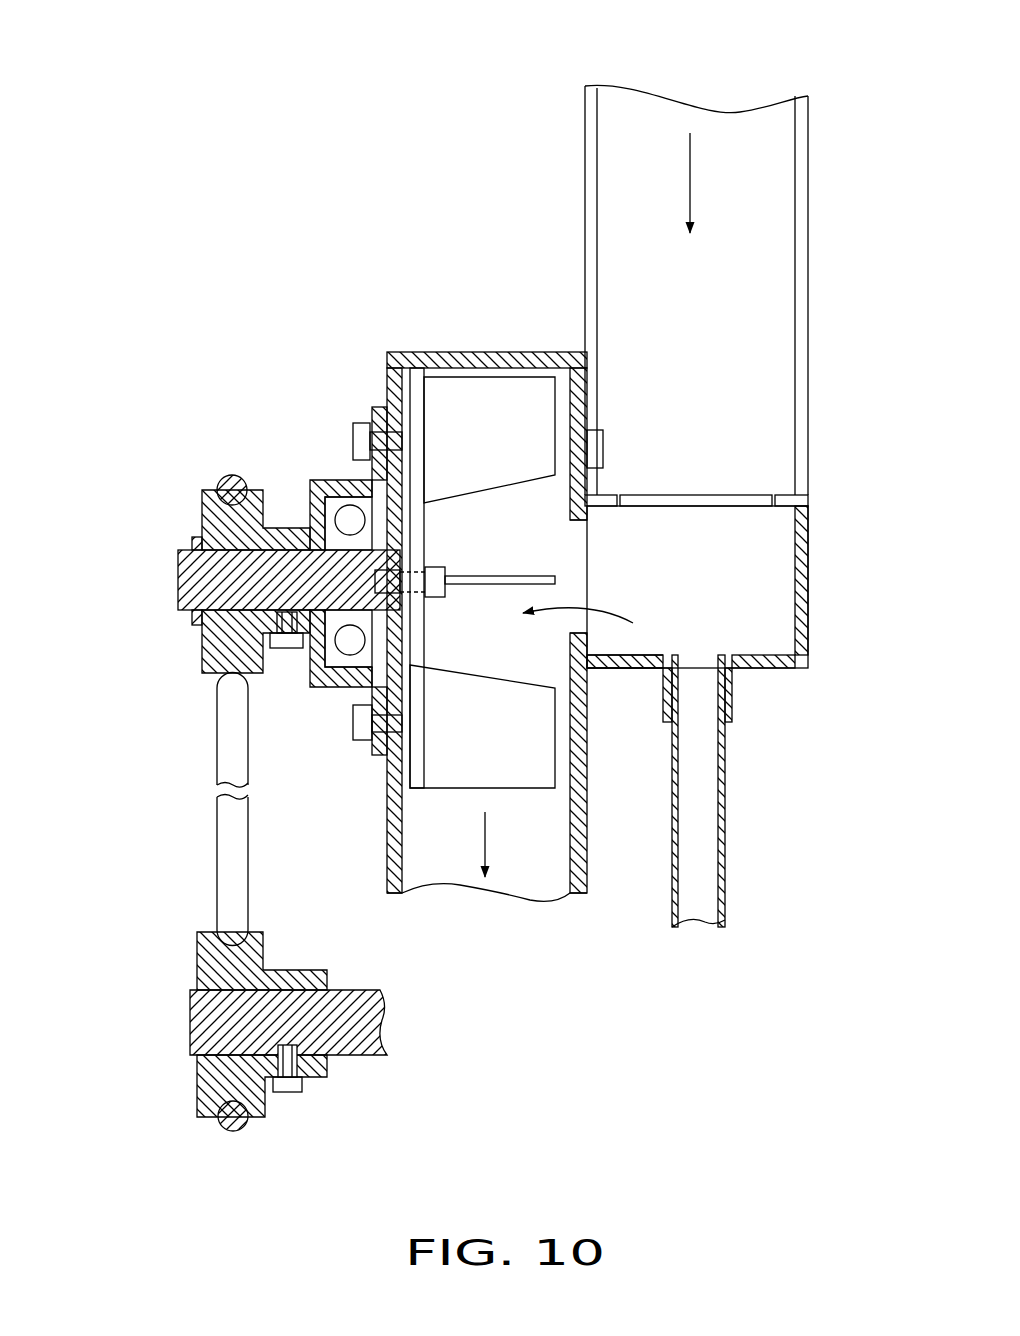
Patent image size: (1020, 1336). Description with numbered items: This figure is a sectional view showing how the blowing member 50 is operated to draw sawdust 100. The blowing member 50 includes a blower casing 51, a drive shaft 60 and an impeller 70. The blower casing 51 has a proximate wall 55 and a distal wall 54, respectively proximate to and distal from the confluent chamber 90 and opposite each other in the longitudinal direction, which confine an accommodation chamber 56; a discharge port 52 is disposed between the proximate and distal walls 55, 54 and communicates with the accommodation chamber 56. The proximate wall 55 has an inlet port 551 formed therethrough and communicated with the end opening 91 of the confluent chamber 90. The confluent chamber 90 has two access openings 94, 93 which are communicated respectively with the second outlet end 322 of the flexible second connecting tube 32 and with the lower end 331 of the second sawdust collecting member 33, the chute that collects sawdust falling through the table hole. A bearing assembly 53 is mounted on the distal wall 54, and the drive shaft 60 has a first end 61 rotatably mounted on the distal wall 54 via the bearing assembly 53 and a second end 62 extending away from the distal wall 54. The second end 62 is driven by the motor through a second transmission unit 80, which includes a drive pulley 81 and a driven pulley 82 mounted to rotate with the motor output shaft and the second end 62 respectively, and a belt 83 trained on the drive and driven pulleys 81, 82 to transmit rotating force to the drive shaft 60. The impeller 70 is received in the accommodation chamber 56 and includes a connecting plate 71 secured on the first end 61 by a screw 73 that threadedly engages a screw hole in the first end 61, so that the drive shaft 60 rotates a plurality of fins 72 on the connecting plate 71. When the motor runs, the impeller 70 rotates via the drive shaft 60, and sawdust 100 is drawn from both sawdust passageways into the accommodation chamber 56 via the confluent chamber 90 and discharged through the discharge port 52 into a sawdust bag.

The sawdust 100 is at (735, 130).
The second sawdust collecting member 33 is at (744, 249).
The access opening 93 is at (730, 490).
The lower end 331 is at (790, 477).
The confluent chamber 90 is at (761, 599).
The end opening 91 is at (588, 663).
The access opening 94 is at (728, 700).
The second outlet end 322 is at (718, 748).
The second connecting tube 32 is at (773, 796).
The blowing member 50 is at (500, 563).
The blower casing 51 is at (482, 352).
The discharge port 52 is at (455, 868).
The bearing assembly 53 is at (325, 485).
The distal wall 54 is at (378, 398).
The proximate wall 55 is at (625, 683).
The inlet port 551 is at (580, 605).
The accommodation chamber 56 is at (565, 380).
The drive shaft 60 is at (237, 523).
The first end 61 is at (375, 682).
The second end 62 is at (185, 592).
The impeller 70 is at (460, 680).
The connecting plate 71 is at (417, 757).
The fins 72 is at (465, 772).
The screw 73 is at (440, 655).
The second transmission unit 80 is at (237, 902).
The drive pulley 81 is at (207, 972).
The driven pulley 82 is at (210, 517).
The belt 83 is at (235, 733).